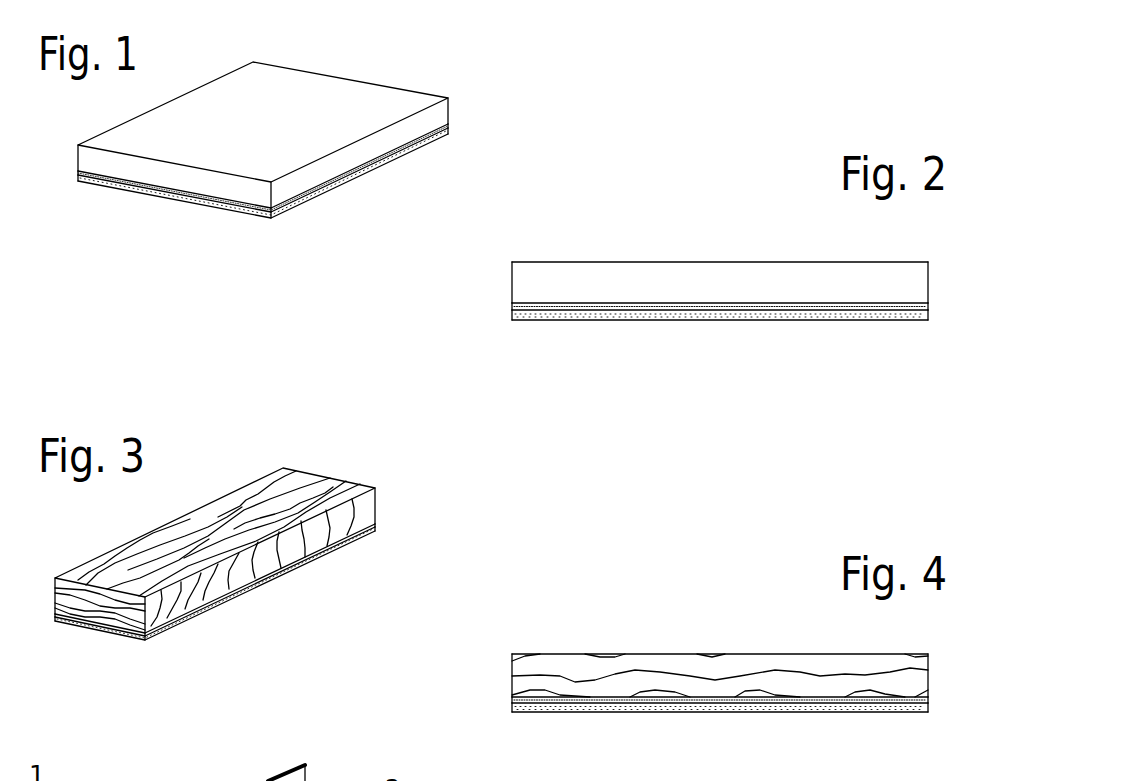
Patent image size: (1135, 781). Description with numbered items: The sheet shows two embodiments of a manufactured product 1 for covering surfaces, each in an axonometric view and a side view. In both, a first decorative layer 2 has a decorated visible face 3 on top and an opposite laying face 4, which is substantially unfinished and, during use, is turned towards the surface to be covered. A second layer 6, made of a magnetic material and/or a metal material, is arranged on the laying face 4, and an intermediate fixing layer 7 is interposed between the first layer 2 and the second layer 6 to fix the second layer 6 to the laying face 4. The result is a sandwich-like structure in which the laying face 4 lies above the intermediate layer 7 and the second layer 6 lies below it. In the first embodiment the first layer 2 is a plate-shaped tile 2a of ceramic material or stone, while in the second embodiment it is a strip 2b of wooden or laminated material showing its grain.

In FIG. 1, the manufactured product 1 is at (483, 52).
In FIG. 2, the manufactured product 1 is at (452, 264).
In FIG. 3, the manufactured product 1 is at (388, 440).
In FIG. 4, the manufactured product 1 is at (456, 645).
In FIG. 1, the first decorative layer 2 is at (470, 109).
In FIG. 2, the first decorative layer 2 is at (592, 242).
In FIG. 3, the first decorative layer 2 is at (398, 495).
In FIG. 4, the first decorative layer 2 is at (562, 637).
In FIG. 1, the tile made of ceramic material 2a is at (270, 138).
In FIG. 2, the tile made of ceramic material 2a is at (723, 297).
In FIG. 3, the strip made of wooden or laminated material 2b is at (242, 510).
In FIG. 4, the strip made of wooden or laminated material 2b is at (705, 683).
In FIG. 2, the visible face 3 is at (663, 262).
In FIG. 4, the visible face 3 is at (643, 654).
In FIG. 2, the laying face 4 is at (790, 304).
In FIG. 4, the laying face 4 is at (812, 697).
In FIG. 1, the second layer 6 is at (117, 188).
In FIG. 2, the second layer 6 is at (612, 319).
In FIG. 3, the second layer 6 is at (75, 625).
In FIG. 4, the second layer 6 is at (590, 708).
In FIG. 1, the intermediate fixing layer 7 is at (212, 200).
In FIG. 2, the intermediate fixing layer 7 is at (742, 310).
In FIG. 3, the intermediate fixing layer 7 is at (253, 587).
In FIG. 4, the intermediate fixing layer 7 is at (722, 700).